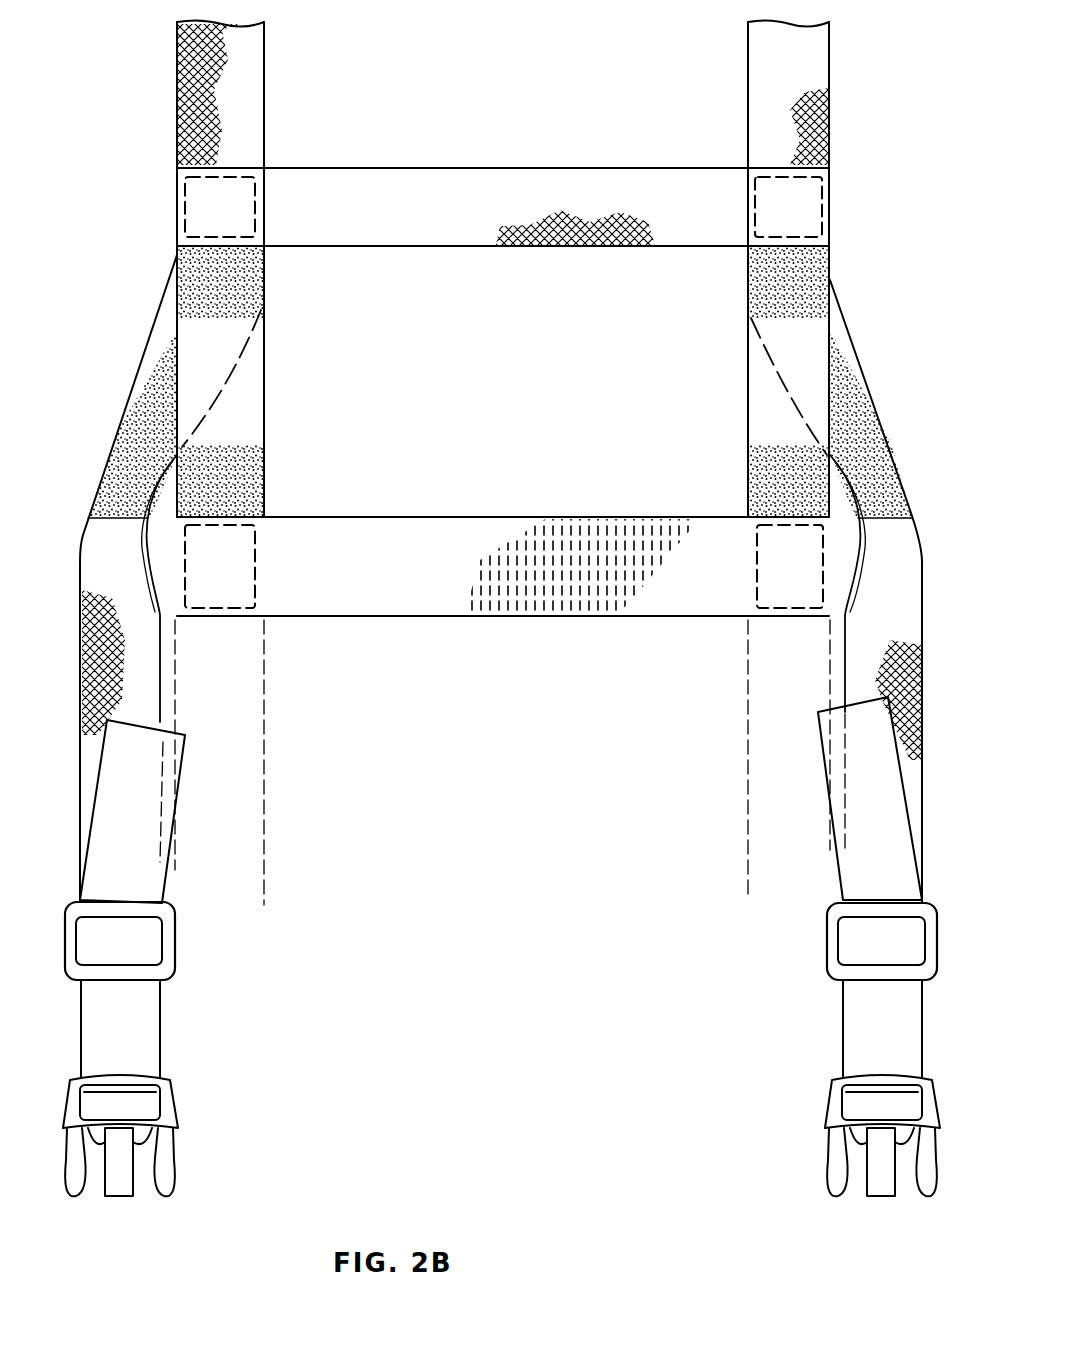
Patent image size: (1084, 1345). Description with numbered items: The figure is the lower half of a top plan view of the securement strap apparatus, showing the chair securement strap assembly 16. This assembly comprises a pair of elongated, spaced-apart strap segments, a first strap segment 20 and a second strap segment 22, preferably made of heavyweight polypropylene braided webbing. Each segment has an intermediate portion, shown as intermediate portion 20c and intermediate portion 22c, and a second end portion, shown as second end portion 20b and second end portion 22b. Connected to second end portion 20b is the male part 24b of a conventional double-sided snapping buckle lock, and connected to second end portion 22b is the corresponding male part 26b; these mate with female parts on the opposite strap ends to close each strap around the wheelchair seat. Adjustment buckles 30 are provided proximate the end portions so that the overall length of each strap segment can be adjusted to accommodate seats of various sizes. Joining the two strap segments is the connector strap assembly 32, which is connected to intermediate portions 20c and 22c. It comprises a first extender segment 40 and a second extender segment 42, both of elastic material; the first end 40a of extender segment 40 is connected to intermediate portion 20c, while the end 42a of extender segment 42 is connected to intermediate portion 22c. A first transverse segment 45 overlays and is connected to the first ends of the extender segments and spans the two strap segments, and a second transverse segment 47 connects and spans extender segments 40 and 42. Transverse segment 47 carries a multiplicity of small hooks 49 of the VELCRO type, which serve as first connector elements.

The chair securement strap assembly 16 is at (148, 128).
The first strap segment 20 is at (252, 57).
The second end portion of first strap segment 20b is at (142, 1018).
The intermediate portion of first strap segment 20c is at (245, 126).
The second strap segment 22 is at (748, 57).
The second end portion of second strap segment 22b is at (858, 1022).
The intermediate portion of second strap segment 22c is at (762, 126).
The male part of first connector 24b is at (173, 1105).
The male part of second connector 26b is at (825, 1105).
The adjustment buckle 30 is at (177, 940).
The connector strap assembly 32 is at (349, 626).
The first extender segment 40 is at (258, 383).
The first end of first extender segment 40a is at (222, 213).
The second extender segment 42 is at (752, 386).
The end of second extender segment 42a is at (790, 210).
The first transverse segment 45 is at (463, 180).
The second transverse segment 47 is at (437, 533).
The hooks 49 is at (601, 572).